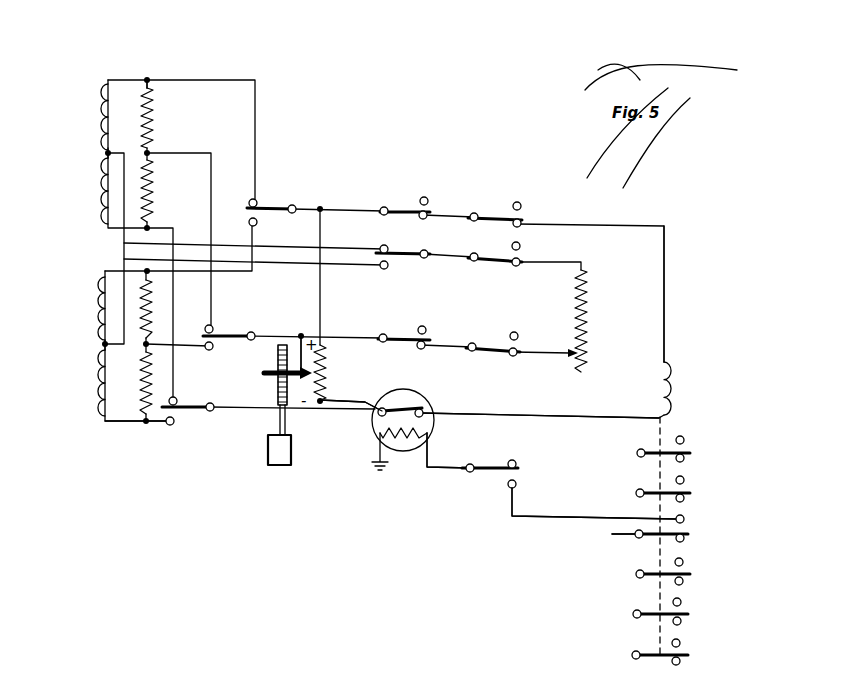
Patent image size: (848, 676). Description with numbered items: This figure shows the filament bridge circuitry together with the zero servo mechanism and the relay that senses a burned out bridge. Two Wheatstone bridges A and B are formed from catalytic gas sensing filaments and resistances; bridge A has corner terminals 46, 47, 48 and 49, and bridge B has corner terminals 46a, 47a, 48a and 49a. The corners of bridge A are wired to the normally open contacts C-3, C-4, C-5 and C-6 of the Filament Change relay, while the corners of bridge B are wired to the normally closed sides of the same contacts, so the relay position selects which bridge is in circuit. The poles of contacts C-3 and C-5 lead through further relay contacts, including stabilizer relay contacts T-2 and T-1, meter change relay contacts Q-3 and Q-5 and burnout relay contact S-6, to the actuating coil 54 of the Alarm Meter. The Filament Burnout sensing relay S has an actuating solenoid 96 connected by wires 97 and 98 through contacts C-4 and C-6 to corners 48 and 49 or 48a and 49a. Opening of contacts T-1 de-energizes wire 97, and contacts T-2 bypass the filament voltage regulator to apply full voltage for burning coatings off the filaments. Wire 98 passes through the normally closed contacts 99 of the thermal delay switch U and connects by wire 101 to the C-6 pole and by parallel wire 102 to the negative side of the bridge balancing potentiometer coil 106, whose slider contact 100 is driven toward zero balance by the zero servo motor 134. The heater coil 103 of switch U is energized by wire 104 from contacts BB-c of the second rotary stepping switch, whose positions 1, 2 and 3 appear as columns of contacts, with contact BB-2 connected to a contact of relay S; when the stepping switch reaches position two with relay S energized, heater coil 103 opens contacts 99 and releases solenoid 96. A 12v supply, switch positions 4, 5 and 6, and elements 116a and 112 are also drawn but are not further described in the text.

The corner terminal 48a is at (147, 79).
The corner terminal 47a is at (147, 153).
The corner terminal 49a is at (147, 228).
The corner terminal 46a is at (107, 153).
The Wheatstone bridge B is at (96, 188).
The corner terminal 46 is at (104, 344).
The Wheatstone bridge A is at (96, 383).
The corner terminal 48 is at (147, 272).
The corner terminal 47 is at (147, 343).
The corner terminal 49 is at (142, 422).
The wire 101 is at (233, 412).
The relay contact C-4 is at (271, 203).
The relay contact C-3 is at (403, 250).
The relay contact C-5 is at (229, 333).
The relay contact C-6 is at (188, 398).
The stabilizer relay contact T-2 is at (405, 199).
The stabilizer relay contact T-1 is at (495, 204).
The meter change relay contact Q-3 is at (495, 248).
The burnout sensing relay contact S-6 is at (404, 331).
The meter change relay contact Q-5 is at (493, 336).
The actuating coil 54 is at (586, 290).
The wire 97 is at (665, 248).
The actuating solenoid 96 is at (672, 390).
The wire 98 is at (518, 414).
The thermal delay switch U is at (400, 392).
The normally closed contacts 99 is at (406, 412).
The wiper contact 100 is at (321, 400).
The bridge balancing potentiometer coil 106 is at (336, 375).
The wire 102 is at (340, 405).
The zero servo motor 134 is at (280, 461).
The heater coil 103 is at (405, 446).
The wire 104 is at (448, 467).
The stepping switch common contact BB-c is at (483, 478).
The stepping switch contact BB-2 is at (511, 490).
The 12 volt supply 12v is at (612, 545).
The Filament Burnout sensing relay S is at (682, 541).
The switch position 1 is at (663, 447).
The switch position 2 is at (663, 485).
The switch position 3 is at (661, 519).
The switch position 4 is at (663, 569).
The switch position 5 is at (660, 609).
The switch position 6 is at (660, 649).
The element of adjacent figure 116a is at (60, 675).
The element of adjacent figure 112 is at (160, 675).